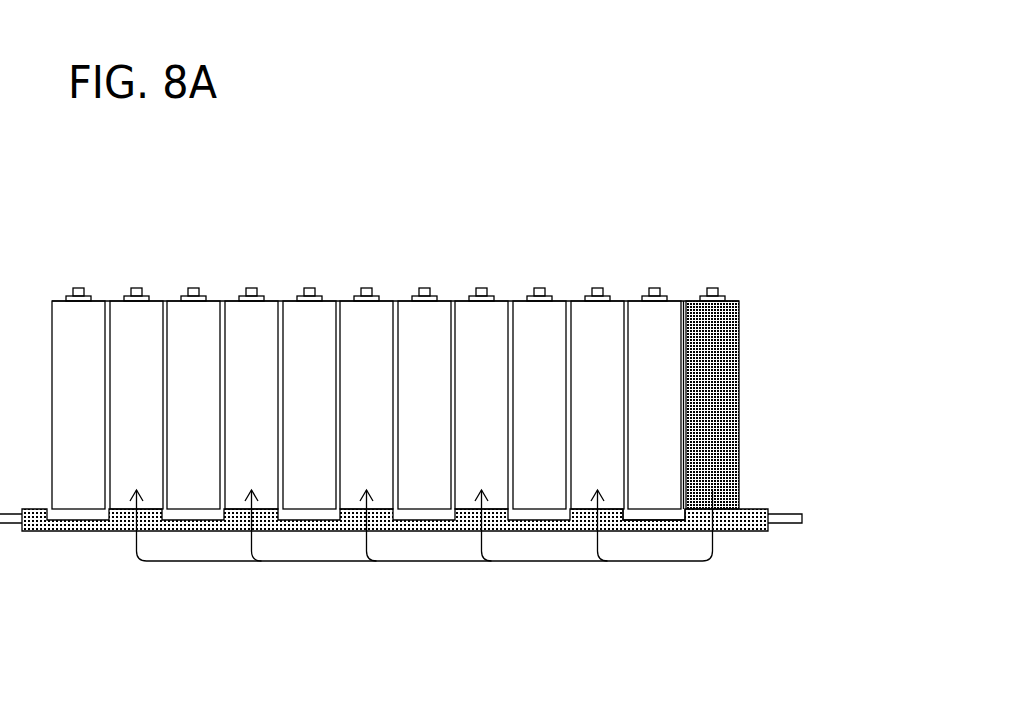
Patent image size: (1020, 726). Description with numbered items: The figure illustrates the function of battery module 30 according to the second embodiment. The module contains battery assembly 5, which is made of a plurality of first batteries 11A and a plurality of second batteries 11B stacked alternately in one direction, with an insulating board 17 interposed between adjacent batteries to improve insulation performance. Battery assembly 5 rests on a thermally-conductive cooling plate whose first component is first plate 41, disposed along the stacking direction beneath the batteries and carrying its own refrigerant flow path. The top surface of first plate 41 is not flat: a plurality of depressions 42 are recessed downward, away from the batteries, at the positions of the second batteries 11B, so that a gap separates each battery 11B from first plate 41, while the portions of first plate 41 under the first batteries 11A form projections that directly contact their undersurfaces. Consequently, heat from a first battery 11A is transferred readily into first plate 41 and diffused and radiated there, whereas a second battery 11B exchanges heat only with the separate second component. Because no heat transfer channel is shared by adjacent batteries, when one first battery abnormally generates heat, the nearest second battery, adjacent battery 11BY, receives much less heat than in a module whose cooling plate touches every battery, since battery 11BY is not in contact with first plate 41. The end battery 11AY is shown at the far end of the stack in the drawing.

The battery module 30 is at (737, 167).
The battery assembly 5 is at (509, 285).
The first battery 11A is at (368, 290).
The second battery 11B is at (312, 290).
The end first battery cell 11AY is at (712, 290).
The adjacent battery 11BY is at (653, 290).
The insulating board 17 is at (683, 414).
The first plate 41 is at (747, 521).
The depression 42 is at (653, 517).